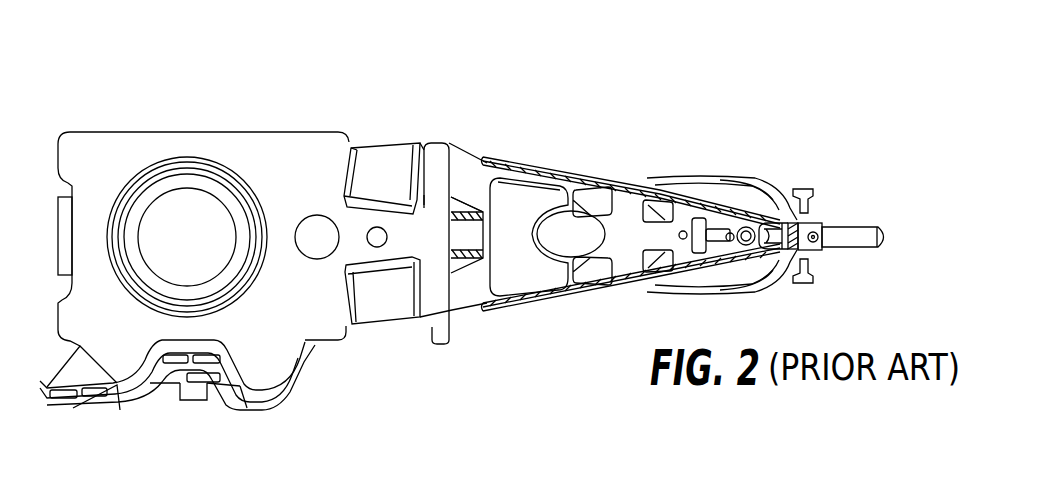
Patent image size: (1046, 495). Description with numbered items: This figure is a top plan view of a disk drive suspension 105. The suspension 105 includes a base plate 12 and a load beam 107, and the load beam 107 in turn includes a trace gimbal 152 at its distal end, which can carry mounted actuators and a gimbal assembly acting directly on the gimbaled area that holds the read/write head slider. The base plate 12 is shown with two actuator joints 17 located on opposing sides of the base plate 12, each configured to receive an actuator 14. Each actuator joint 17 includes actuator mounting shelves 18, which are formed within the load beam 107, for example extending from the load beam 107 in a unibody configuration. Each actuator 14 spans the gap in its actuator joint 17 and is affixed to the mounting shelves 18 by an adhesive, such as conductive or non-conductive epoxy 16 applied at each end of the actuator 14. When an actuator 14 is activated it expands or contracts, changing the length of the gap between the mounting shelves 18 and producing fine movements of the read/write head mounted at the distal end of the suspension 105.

The base plate 12 is at (138, 365).
The actuator 14 is at (380, 147).
The epoxy 16 is at (355, 147).
The actuator joint 17 is at (370, 338).
The actuator mounting shelves 18 is at (423, 210).
The suspension 105 is at (473, 120).
The load beam 107 is at (560, 173).
The trace gimbal 152 is at (768, 167).